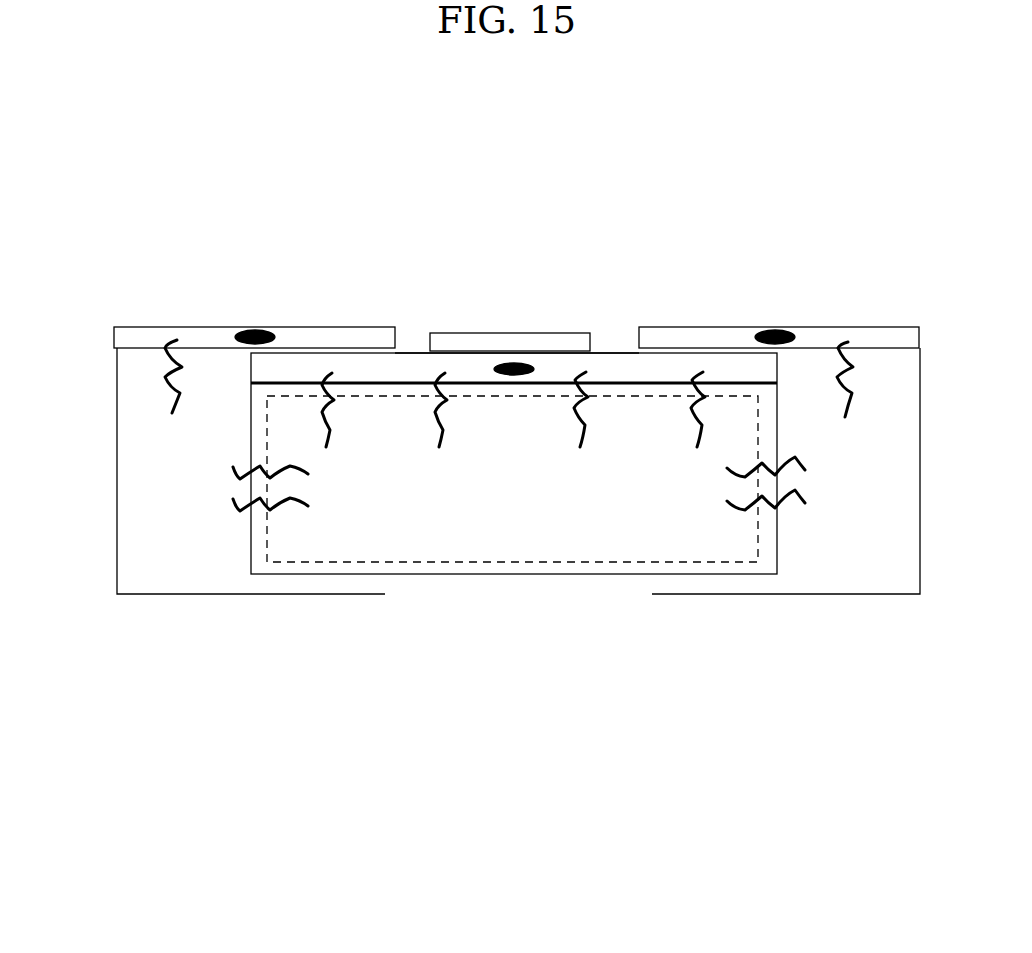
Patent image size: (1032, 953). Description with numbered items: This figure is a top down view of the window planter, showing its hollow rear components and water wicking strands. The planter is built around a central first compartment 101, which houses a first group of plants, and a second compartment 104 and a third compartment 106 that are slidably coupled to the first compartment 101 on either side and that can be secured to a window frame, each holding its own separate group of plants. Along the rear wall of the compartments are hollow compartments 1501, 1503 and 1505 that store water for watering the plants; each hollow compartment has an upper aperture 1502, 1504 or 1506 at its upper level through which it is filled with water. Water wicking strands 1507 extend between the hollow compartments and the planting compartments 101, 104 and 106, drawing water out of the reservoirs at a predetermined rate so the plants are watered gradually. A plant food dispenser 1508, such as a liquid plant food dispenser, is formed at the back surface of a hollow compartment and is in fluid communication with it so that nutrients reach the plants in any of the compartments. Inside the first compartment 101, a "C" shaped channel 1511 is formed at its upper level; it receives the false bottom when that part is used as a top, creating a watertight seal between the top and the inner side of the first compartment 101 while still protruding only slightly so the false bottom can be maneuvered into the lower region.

The first compartment 101 is at (509, 562).
The second compartment 104 is at (179, 557).
The third compartment 106 is at (873, 558).
The hollow compartment 1501 is at (413, 353).
The upper aperture 1502 is at (514, 365).
The hollow compartment 1503 is at (138, 327).
The upper aperture 1504 is at (255, 330).
The right electrode 1505 is at (692, 327).
The upper aperture 1506 is at (775, 330).
The water wicking strand 1507 is at (172, 388).
The plant food dispenser 1508 is at (469, 333).
The "C" shaped channel 1511 is at (405, 569).